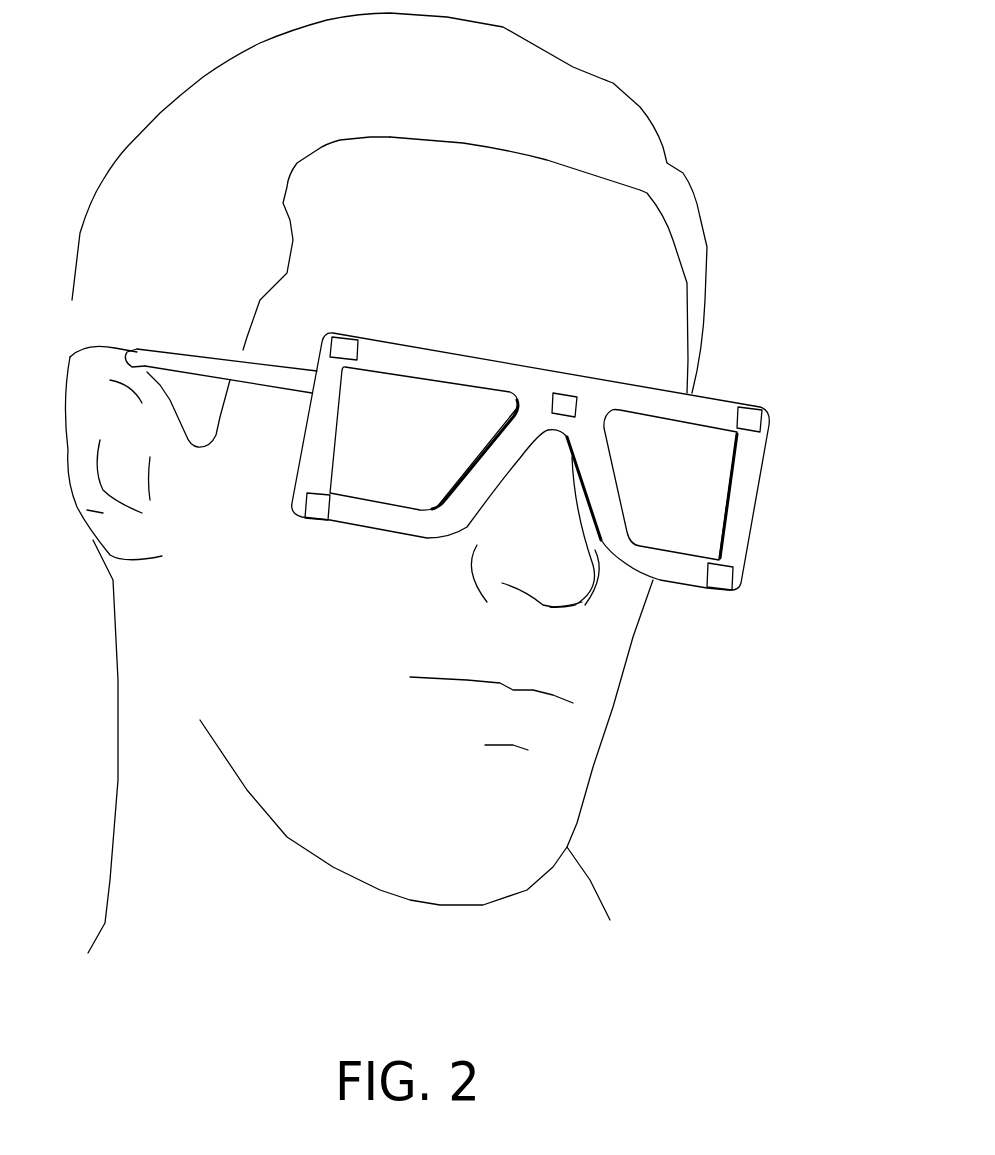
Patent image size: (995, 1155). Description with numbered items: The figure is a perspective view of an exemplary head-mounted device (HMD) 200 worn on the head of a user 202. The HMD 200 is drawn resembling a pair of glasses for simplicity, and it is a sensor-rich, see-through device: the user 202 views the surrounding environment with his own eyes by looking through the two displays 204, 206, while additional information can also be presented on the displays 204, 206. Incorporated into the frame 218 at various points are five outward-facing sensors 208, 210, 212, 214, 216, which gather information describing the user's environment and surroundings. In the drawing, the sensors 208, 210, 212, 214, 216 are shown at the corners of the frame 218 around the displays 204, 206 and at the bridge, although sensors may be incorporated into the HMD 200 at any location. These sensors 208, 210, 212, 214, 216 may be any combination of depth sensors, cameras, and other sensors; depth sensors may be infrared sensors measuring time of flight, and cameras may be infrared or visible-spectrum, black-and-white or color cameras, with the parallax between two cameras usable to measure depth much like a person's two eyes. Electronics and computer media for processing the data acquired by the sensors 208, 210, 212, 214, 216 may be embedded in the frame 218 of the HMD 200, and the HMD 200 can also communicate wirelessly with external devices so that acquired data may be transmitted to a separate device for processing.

The head-mounted device 200 is at (500, 458).
The user 202 is at (572, 83).
The display 204 is at (387, 477).
The display 206 is at (667, 530).
The sensor 208 is at (345, 345).
The sensor 210 is at (563, 403).
The sensor 212 is at (747, 413).
The sensor 214 is at (727, 573).
The sensor 216 is at (317, 510).
The frame 218 is at (498, 357).